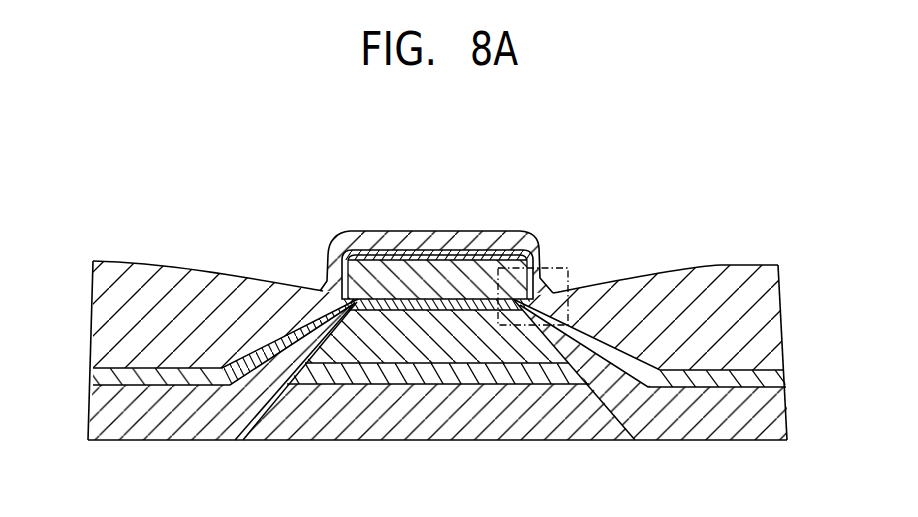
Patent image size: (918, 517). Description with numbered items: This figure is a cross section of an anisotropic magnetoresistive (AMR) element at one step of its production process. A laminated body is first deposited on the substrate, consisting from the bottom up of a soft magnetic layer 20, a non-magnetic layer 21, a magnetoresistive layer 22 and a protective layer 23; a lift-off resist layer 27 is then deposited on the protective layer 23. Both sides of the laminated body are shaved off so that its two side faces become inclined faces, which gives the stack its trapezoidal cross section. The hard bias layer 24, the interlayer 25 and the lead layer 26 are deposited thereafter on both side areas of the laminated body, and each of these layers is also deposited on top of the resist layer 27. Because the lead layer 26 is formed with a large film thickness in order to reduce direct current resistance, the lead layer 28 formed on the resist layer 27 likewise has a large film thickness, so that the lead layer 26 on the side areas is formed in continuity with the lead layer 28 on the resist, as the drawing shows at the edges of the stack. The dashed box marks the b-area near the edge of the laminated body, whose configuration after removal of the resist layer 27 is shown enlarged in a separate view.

The soft magnetic layer 20 is at (395, 414).
The non-magnetic layer 21 is at (528, 377).
The magnetoresistive layer 22 is at (463, 352).
The protective layer 23 is at (408, 299).
The hard bias layer 24 is at (117, 415).
The interlayer 25 is at (107, 377).
The lead layer 26 is at (103, 309).
The lift-off resist layer 27 is at (372, 257).
The lead layer 28 is at (476, 240).
The b-area b is at (563, 266).